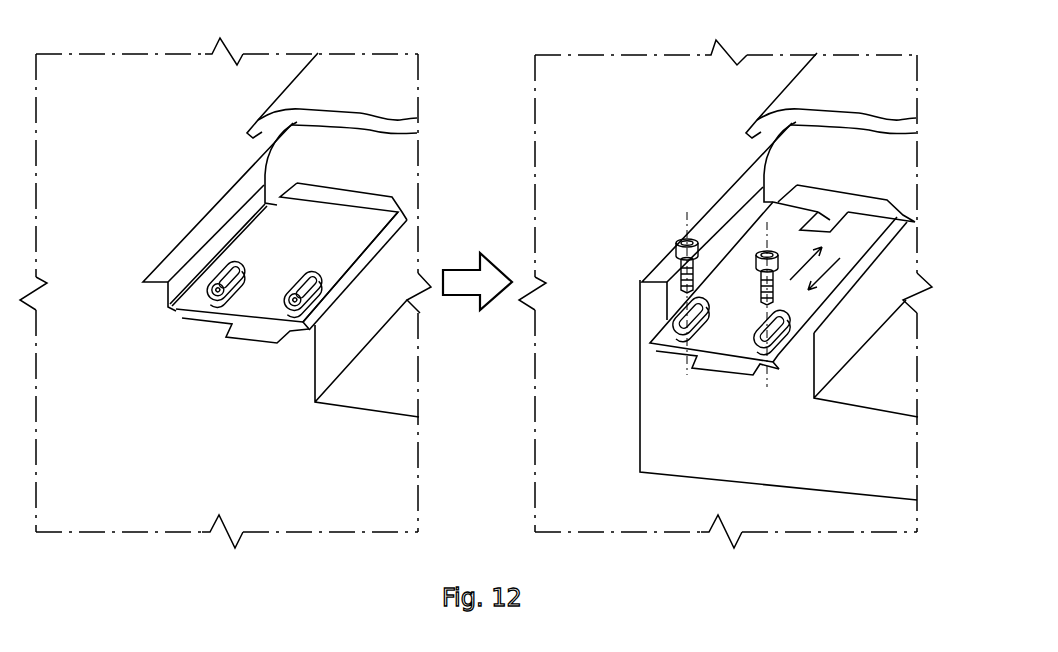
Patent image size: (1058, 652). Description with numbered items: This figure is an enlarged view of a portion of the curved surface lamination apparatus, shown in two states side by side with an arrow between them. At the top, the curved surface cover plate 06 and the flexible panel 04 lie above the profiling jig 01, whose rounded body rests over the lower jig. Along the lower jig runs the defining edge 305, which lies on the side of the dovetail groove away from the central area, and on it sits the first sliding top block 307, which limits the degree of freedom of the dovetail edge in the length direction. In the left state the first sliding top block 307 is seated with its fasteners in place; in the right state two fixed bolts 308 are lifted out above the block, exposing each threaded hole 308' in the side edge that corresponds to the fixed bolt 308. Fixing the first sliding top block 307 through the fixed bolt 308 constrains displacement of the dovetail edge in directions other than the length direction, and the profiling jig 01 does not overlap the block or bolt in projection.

The profiling jig 01 is at (308, 163).
The flexible panel 04 is at (308, 122).
The curved surface cover plate 06 is at (308, 90).
The defining edge 305 is at (173, 262).
The first sliding top block 307 is at (295, 223).
The fixed bolt 308 is at (678, 286).
The threaded hole 308' is at (498, 332).